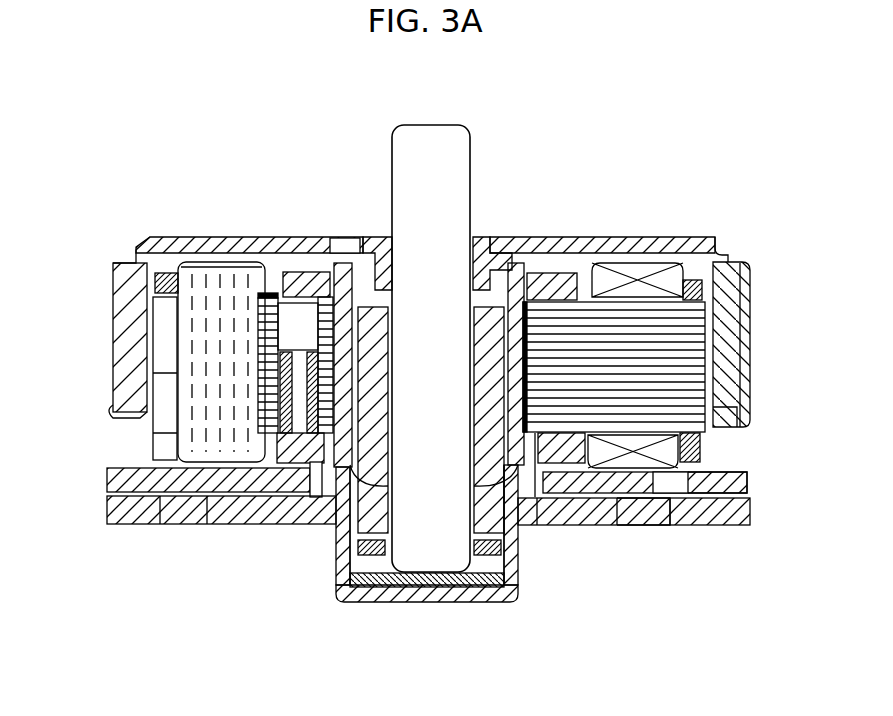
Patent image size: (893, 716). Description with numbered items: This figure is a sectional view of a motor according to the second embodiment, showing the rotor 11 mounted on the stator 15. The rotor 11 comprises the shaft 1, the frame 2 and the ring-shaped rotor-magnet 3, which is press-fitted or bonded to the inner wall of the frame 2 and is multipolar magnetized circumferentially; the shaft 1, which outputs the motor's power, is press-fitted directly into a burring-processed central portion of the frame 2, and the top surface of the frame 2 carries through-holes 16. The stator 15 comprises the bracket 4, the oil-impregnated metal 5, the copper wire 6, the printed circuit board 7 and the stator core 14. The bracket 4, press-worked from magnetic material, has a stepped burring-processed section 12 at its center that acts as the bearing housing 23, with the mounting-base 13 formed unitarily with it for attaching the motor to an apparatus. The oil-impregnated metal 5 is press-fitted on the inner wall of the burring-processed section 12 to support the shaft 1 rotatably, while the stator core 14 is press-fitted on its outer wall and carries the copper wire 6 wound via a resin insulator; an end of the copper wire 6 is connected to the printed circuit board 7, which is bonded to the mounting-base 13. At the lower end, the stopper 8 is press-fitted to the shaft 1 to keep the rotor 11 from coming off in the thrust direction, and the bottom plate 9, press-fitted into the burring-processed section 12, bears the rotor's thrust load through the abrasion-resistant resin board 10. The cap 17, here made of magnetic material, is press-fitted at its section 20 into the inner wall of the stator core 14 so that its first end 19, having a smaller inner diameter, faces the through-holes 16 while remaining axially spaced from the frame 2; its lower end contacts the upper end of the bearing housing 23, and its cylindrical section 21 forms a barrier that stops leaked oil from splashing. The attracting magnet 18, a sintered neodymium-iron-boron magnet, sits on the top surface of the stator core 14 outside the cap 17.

The shaft 1 is at (460, 200).
The frame 2 is at (615, 237).
The rotor-magnet 3 is at (716, 238).
The bracket 4 is at (607, 510).
The oil-impregnated metal 5 is at (517, 557).
The copper wire 6 is at (657, 500).
The printed circuit board 7 is at (580, 497).
The stopper 8 is at (343, 602).
The bottom plate 9 is at (405, 605).
The resin board 10 is at (465, 587).
The rotor 11 is at (537, 110).
The burring-processed section 12 is at (290, 497).
The mounting-base 13 is at (217, 513).
The stator core 14 is at (715, 497).
The stator 15 is at (535, 642).
The through-holes 16 is at (343, 240).
The cap 17 is at (348, 285).
The attracting magnet 18 is at (605, 300).
The first end 19 is at (363, 245).
The section 20 is at (273, 302).
The cylindrical section 21 is at (330, 347).
The bearing housing 23 is at (523, 378).